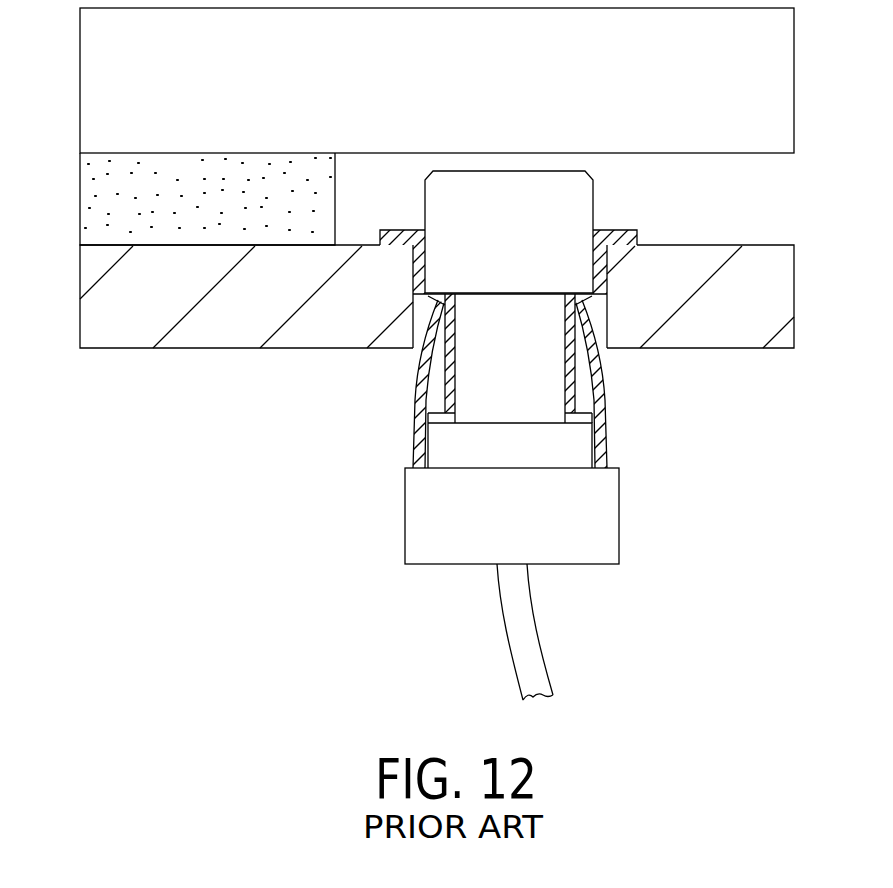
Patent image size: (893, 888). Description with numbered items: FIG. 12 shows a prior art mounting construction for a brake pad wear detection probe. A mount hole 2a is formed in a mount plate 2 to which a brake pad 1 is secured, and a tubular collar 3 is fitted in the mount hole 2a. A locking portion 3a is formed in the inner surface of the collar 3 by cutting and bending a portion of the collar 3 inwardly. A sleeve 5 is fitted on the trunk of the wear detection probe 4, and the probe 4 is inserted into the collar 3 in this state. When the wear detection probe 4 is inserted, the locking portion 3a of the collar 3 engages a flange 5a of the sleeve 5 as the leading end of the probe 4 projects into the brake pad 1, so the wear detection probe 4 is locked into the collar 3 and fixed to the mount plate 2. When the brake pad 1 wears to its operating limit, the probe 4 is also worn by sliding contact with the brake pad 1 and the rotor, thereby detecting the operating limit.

The brake pad 1 is at (110, 200).
The mount plate 2 is at (110, 297).
The mount hole 2a is at (418, 320).
The tubular collar 3 is at (603, 450).
The locking portion 3a is at (423, 402).
The wear detection probe 4 is at (517, 402).
The sleeve 5 is at (570, 357).
The flange 5a is at (605, 308).